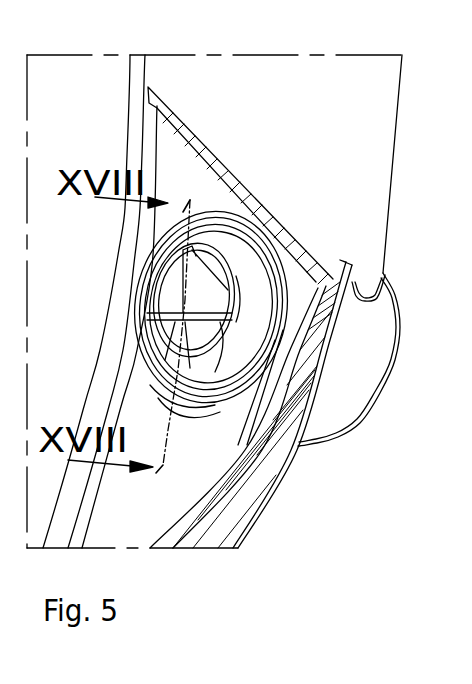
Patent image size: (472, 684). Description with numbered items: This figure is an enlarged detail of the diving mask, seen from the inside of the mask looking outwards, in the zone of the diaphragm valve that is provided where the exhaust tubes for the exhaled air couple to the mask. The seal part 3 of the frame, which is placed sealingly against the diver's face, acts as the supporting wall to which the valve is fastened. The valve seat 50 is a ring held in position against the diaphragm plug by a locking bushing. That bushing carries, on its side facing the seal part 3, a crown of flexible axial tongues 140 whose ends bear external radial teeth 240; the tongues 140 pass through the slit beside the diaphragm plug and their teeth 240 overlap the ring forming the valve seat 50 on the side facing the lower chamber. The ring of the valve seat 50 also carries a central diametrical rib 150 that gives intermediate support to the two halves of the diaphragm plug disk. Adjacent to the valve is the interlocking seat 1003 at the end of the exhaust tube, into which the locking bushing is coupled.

The seal part 3 is at (270, 497).
The valve seat 50 is at (150, 388).
The flexible axial tongues 140 is at (176, 288).
The central diametrical rib 150 is at (170, 318).
The external radial teeth 240 is at (222, 268).
The interlocking seat 1003 is at (345, 415).